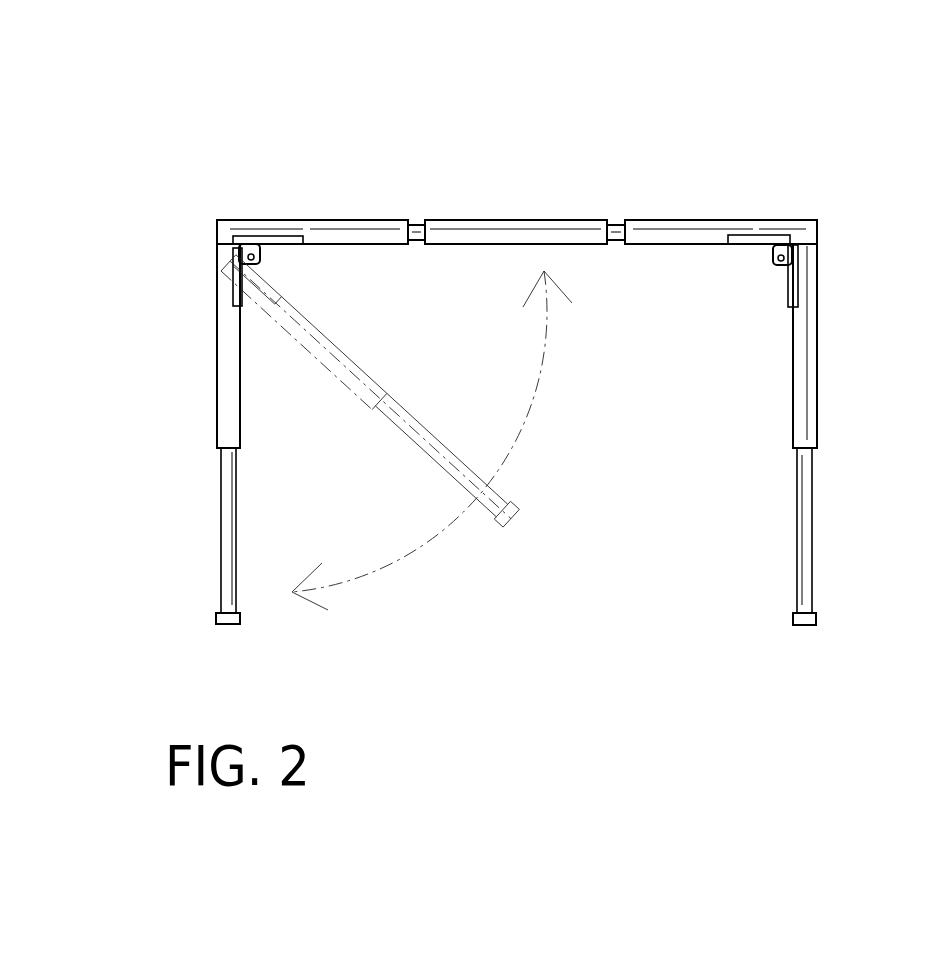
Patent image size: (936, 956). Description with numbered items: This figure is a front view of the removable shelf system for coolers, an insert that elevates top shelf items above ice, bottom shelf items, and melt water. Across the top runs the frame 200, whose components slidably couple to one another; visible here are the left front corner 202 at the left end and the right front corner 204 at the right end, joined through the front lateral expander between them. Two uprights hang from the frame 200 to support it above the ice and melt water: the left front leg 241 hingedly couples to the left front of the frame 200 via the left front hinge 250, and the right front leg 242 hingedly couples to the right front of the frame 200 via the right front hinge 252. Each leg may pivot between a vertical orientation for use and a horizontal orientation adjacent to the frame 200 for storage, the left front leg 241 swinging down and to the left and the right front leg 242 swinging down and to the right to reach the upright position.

The frame 200 is at (182, 202).
The left front corner 202 is at (307, 225).
The right front corner 204 is at (650, 225).
The left front leg 241 is at (223, 405).
The right front leg 242 is at (813, 403).
The left front hinge 250 is at (250, 257).
The right front hinge 252 is at (781, 258).